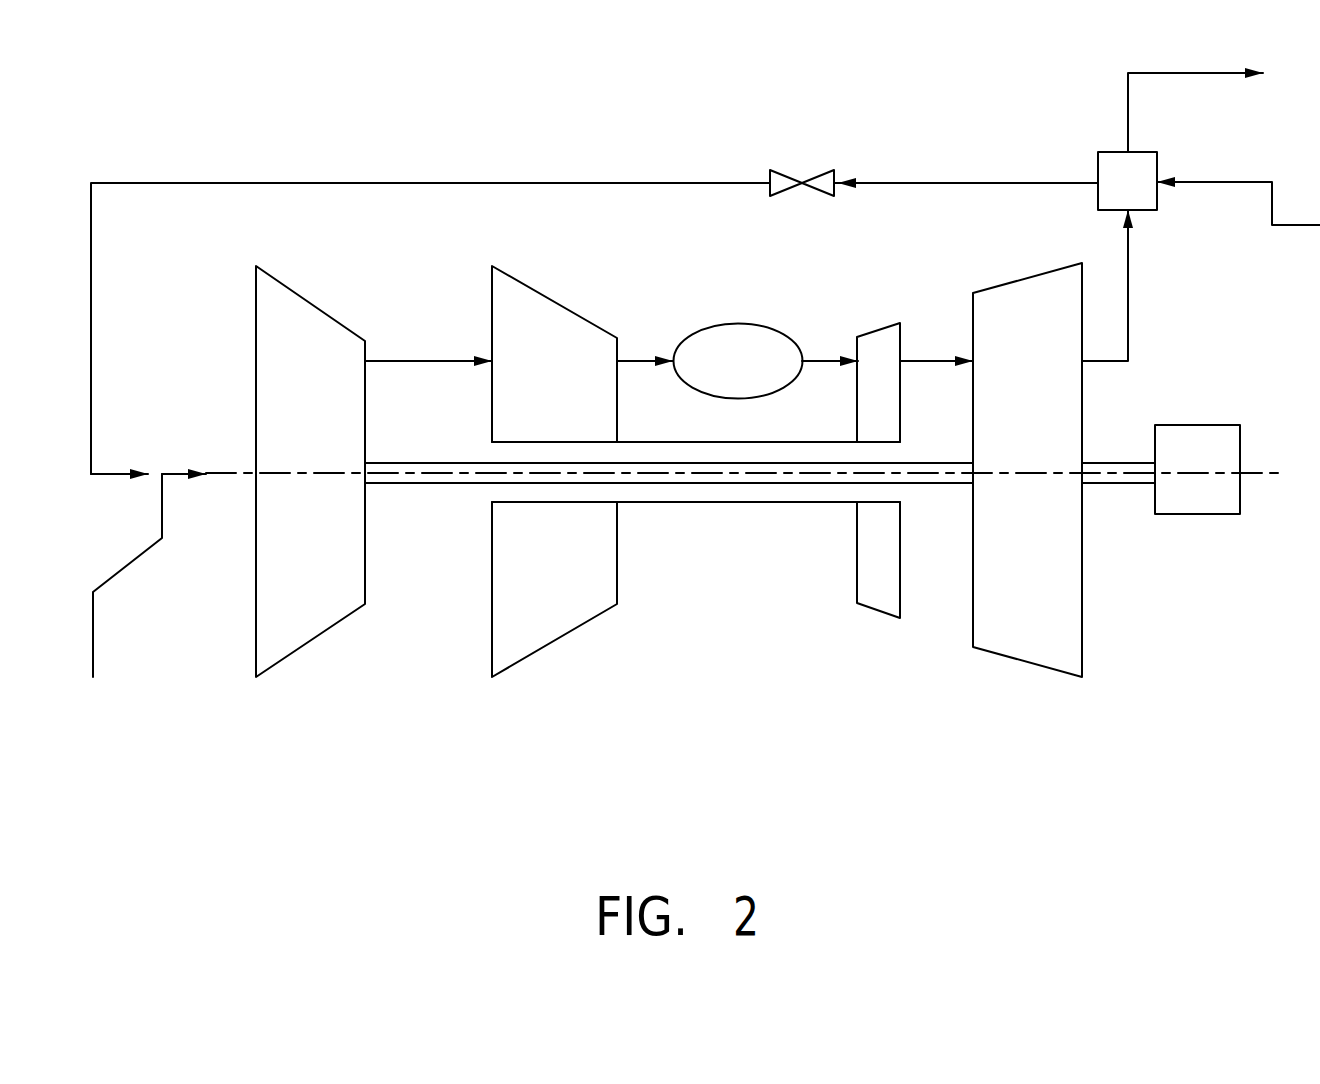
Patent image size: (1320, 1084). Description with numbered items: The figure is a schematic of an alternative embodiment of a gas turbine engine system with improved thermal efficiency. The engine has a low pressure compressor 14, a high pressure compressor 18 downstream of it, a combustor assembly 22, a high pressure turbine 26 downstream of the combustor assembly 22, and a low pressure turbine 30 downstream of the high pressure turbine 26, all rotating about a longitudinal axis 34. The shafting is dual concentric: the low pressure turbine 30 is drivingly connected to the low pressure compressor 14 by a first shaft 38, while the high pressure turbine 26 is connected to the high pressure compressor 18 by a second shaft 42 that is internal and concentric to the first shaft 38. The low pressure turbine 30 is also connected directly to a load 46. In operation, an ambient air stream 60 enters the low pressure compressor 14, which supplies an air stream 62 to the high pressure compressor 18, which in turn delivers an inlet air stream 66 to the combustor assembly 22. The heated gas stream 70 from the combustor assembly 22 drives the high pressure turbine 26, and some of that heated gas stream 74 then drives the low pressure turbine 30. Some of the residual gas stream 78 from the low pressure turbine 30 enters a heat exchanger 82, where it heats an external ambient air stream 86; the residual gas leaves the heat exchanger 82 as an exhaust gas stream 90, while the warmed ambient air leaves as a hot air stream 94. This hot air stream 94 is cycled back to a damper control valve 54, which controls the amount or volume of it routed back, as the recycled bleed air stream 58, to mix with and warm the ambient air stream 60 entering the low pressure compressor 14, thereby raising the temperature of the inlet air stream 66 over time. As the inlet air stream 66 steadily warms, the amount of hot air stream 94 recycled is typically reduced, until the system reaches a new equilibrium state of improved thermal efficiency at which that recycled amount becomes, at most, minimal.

The low pressure compressor 14 is at (305, 627).
The high pressure compressor 18 is at (543, 620).
The combustor assembly 22 is at (713, 333).
The high pressure turbine 26 is at (880, 603).
The low pressure turbine 30 is at (1074, 594).
The longitudinal axis 34 is at (238, 473).
The first shaft 38 is at (463, 485).
The second shaft 42 is at (748, 503).
The load 46 is at (1201, 426).
The damper control valve 54 is at (787, 170).
The recycled bleed air stream 58 is at (405, 182).
The ambient air stream 60 is at (93, 640).
The air stream 62 is at (387, 361).
The inlet air stream 66 is at (633, 357).
The heated gas stream 70 is at (817, 357).
The heated gas stream 74 is at (925, 357).
The residual gas stream 78 is at (1133, 314).
The heat exchanger 82 is at (1157, 168).
The external ambient air stream 86 is at (1207, 182).
The exhaust gas stream 90 is at (1202, 73).
The hot air stream 94 is at (1003, 180).